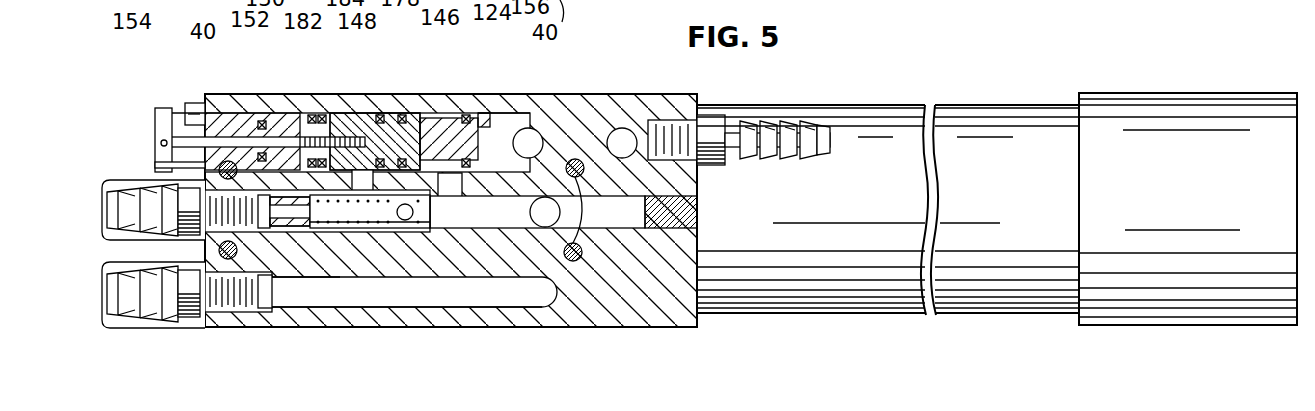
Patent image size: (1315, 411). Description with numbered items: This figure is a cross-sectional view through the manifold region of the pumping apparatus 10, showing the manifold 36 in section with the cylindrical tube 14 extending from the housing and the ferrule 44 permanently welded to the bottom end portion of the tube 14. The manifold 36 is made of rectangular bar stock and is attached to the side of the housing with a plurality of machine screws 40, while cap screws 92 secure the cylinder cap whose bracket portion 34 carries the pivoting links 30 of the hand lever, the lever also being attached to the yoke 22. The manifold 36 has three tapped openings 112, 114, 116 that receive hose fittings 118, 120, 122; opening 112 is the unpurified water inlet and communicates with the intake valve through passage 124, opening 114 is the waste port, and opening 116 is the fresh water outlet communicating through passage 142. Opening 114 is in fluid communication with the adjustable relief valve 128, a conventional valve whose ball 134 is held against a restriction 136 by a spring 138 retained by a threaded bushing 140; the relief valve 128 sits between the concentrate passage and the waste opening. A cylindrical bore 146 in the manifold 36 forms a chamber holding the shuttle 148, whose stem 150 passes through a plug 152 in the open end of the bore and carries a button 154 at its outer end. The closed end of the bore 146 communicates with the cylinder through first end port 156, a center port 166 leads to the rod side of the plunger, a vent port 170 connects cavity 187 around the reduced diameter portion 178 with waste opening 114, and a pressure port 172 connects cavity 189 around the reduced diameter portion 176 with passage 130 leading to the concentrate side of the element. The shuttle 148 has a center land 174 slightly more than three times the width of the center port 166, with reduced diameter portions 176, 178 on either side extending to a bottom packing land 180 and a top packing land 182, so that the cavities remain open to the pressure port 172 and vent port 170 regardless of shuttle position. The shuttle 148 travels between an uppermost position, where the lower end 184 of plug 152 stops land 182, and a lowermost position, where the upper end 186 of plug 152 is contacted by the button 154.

The pumping apparatus 10 is at (592, 82).
The cylindrical tube 14 is at (958, 106).
The yoke 22 is at (135, 180).
The links 30 is at (152, 320).
The bracket portion 34 is at (188, 324).
The manifold 36 is at (600, 103).
The machine screws 40 is at (219, 166).
The ferrule 44 is at (1162, 105).
The cap screws 92 is at (192, 103).
The tapped opening 112 is at (228, 300).
The tapped opening 114 is at (278, 272).
The tapped opening 116 is at (678, 123).
The hose fitting 118 is at (128, 315).
The hose fitting 120 is at (139, 140).
The hose fitting 122 is at (793, 127).
The passage 124 is at (438, 300).
The adjustable relief valve 128 is at (390, 228).
The passage 130 is at (510, 218).
The ball 134 is at (418, 212).
The restriction 136 is at (423, 226).
The spring 138 is at (338, 233).
The threaded bushing 140 is at (297, 230).
The passage 142 is at (630, 128).
The cylindrical bore 146 is at (512, 113).
The shuttle 148 is at (432, 112).
The stem 150 is at (230, 135).
The plug 152 is at (238, 138).
The button 154 is at (155, 113).
The first end port 156 is at (540, 128).
The center port 166 is at (367, 142).
The vent port 170 is at (363, 190).
The pressure port 172 is at (451, 211).
The center land 174 is at (398, 112).
The reduced diameter portion 176 is at (420, 113).
The reduced diameter portion 178 is at (343, 135).
The packing land 180 is at (478, 113).
The packing land 182 is at (312, 140).
The lower end of plug 184 is at (307, 135).
The upper end of plug 186 is at (200, 115).
The cavity 187 is at (337, 175).
The cavity 189 is at (452, 172).